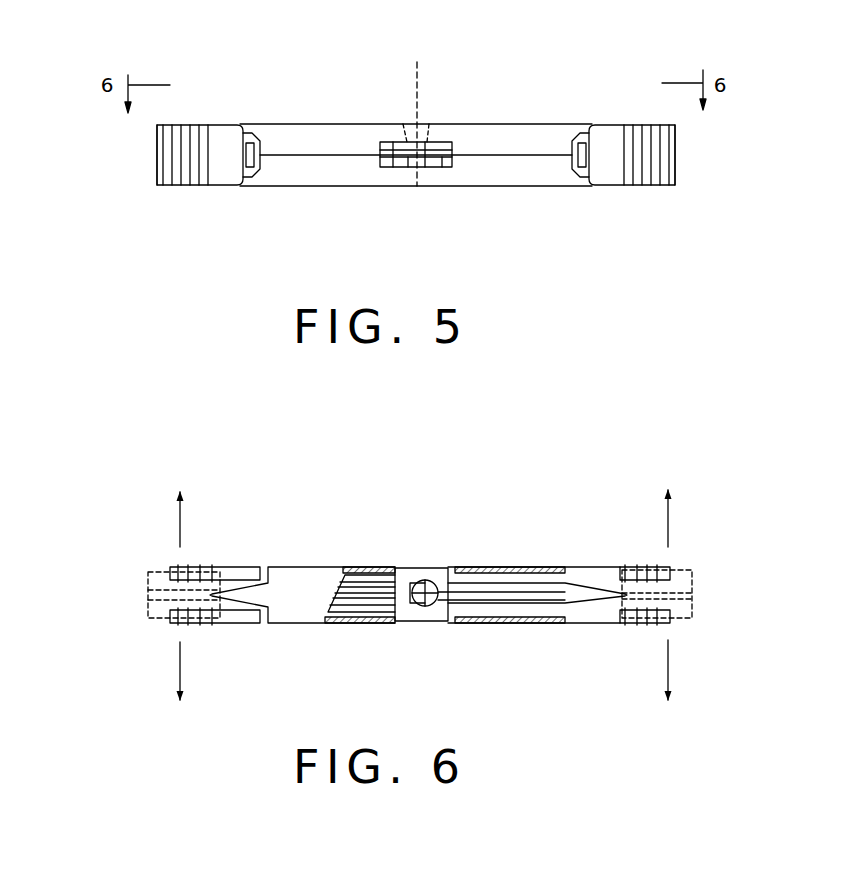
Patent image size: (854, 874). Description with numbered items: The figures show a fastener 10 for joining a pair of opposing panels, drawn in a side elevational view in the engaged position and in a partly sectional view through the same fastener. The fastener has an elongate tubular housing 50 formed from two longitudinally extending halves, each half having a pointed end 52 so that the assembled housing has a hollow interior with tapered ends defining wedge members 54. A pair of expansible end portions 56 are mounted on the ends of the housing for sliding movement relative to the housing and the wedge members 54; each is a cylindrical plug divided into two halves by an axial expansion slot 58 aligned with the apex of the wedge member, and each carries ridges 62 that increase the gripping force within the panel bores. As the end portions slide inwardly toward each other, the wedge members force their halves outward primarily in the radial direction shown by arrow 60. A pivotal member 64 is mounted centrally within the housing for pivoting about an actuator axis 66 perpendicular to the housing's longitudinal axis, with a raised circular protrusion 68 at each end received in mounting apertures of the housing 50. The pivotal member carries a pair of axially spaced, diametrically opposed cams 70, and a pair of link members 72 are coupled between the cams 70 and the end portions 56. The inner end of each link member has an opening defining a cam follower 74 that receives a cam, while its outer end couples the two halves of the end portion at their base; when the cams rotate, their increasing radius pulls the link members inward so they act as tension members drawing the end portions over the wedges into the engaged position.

In FIG. 5, the fastener 10 is at (290, 212).
In FIG. 6, the fastener 10 is at (275, 532).
In FIG. 5, the housing 50 is at (555, 138).
In FIG. 6, the housing 50 is at (502, 577).
In FIG. 5, the pointed end 52 is at (197, 125).
In FIG. 6, the pointed end 52 is at (630, 593).
In FIG. 5, the wedge member 54 is at (263, 110).
In FIG. 6, the wedge member 54 is at (267, 592).
In FIG. 5, the expansible end portion 56 is at (157, 158).
In FIG. 6, the expansible end portion 56 is at (175, 620).
In FIG. 6, the expansion slot 58 is at (170, 585).
In FIG. 6, the arrow 60 is at (182, 672).
In FIG. 5, the ridges 62 is at (178, 190).
In FIG. 6, the ridges 62 is at (195, 567).
In FIG. 5, the pivotal member 64 is at (417, 205).
In FIG. 6, the pivotal member 64 is at (425, 538).
In FIG. 5, the actuator axis 66 is at (467, 56).
In FIG. 5, the raised circular protrusion 68 is at (425, 130).
In FIG. 6, the raised circular protrusion 68 is at (428, 581).
In FIG. 6, the cam 70 is at (410, 572).
In FIG. 5, the link member 72 is at (395, 163).
In FIG. 6, the link member 72 is at (347, 625).
In FIG. 5, the cam follower 74 is at (408, 148).
In FIG. 6, the cam follower 74 is at (408, 616).